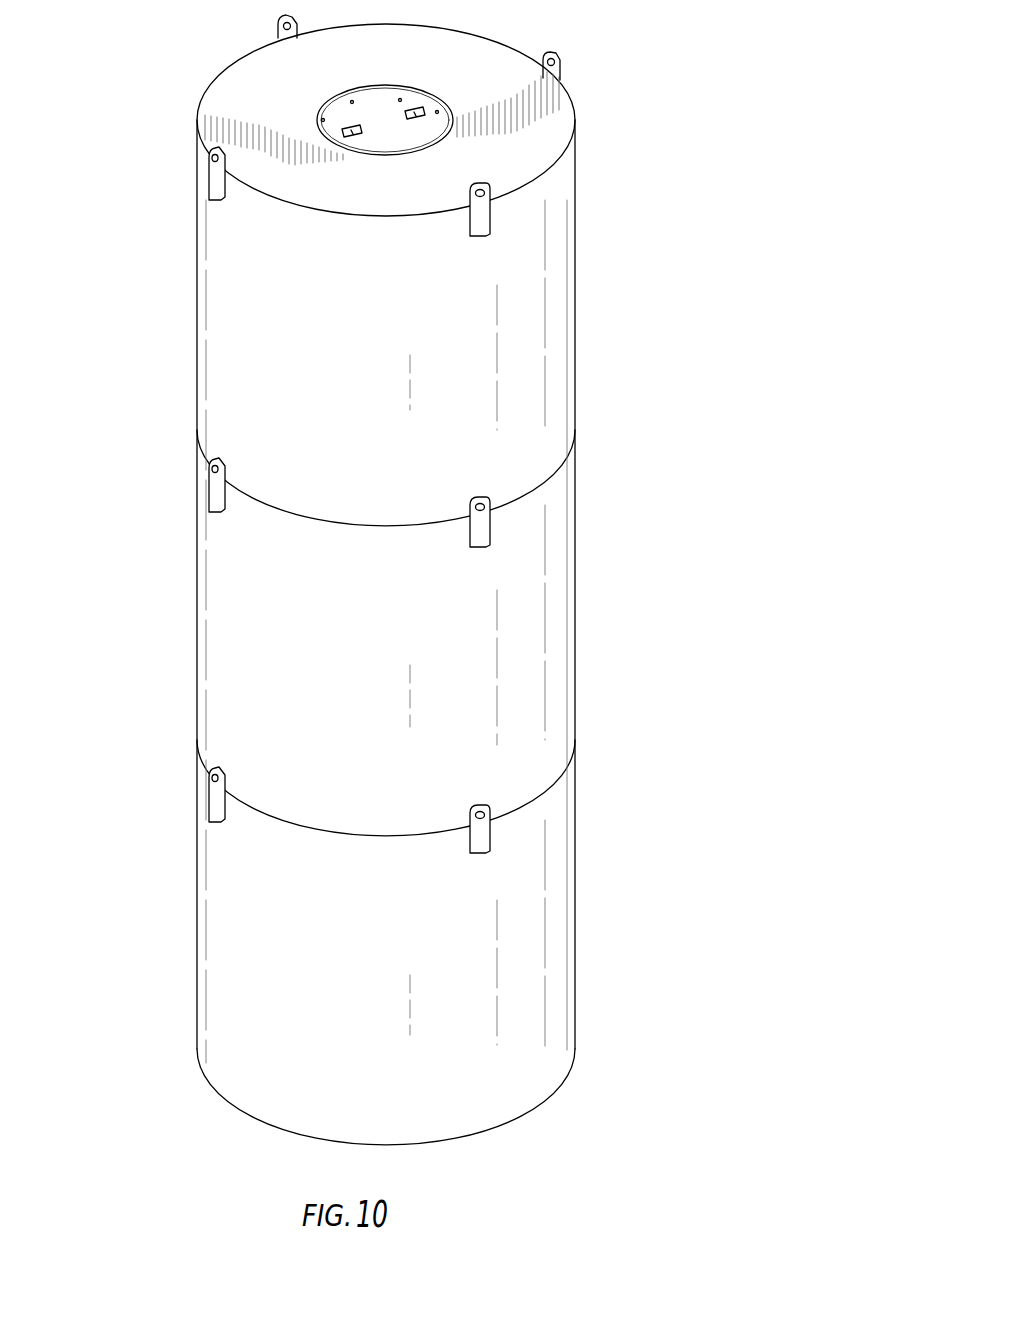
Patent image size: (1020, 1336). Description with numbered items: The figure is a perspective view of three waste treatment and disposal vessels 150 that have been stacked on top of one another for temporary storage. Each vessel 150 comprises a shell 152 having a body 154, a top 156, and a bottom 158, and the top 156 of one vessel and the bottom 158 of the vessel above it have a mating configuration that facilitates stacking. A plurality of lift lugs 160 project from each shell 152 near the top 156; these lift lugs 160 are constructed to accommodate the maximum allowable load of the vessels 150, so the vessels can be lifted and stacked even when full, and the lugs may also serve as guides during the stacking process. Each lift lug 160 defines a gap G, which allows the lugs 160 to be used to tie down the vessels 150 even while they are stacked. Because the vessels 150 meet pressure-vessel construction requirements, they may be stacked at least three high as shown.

The waste treatment and disposal vessel 150 is at (530, 343).
The shell 152 is at (575, 220).
The body 154 is at (558, 255).
The top 156 is at (568, 92).
The bottom 158 is at (518, 1125).
The lift lug 160 is at (275, 20).
The gap G is at (222, 457).